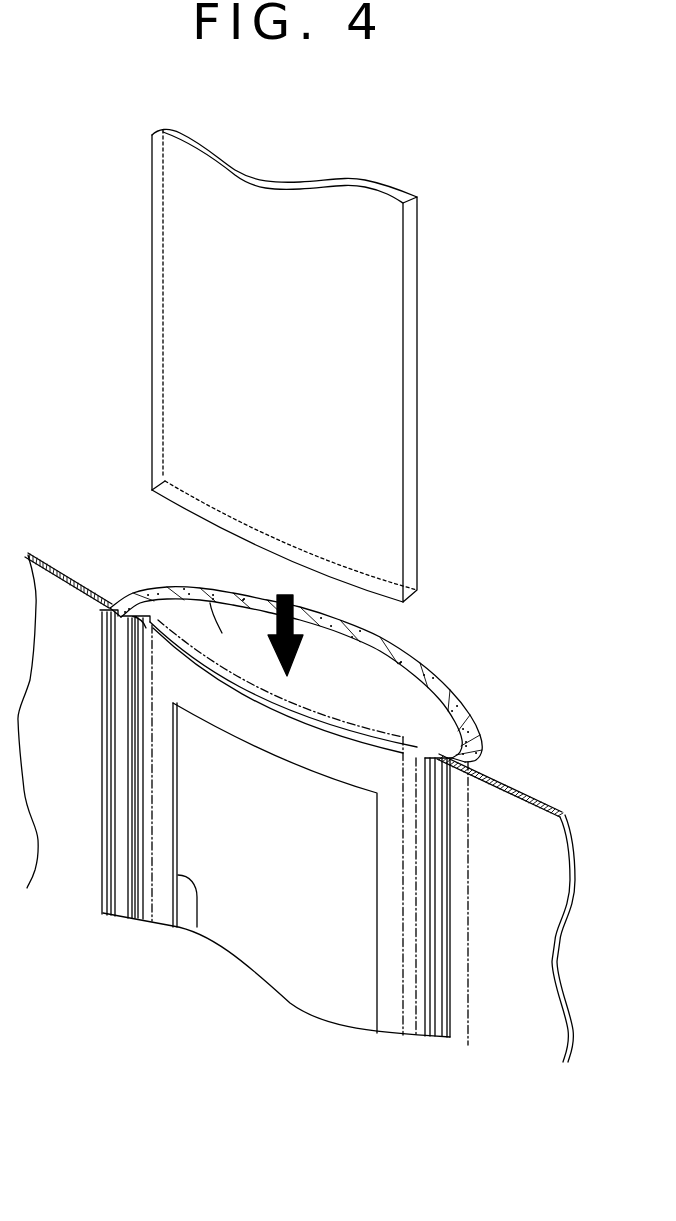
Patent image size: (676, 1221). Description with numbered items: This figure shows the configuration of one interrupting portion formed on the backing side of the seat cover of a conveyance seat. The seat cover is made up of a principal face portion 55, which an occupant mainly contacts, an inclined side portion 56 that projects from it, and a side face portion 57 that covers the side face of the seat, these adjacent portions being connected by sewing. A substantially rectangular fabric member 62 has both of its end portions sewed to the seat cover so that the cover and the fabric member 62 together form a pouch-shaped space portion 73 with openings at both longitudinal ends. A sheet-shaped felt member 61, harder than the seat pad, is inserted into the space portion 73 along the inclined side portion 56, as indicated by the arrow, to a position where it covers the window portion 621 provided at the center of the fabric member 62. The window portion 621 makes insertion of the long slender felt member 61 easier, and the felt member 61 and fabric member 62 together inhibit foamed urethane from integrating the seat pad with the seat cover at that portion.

The felt member 61 is at (413, 374).
The fabric member 62 is at (267, 737).
The window portion 621 is at (193, 930).
The space portion 73 is at (197, 597).
The principal face portion 55 is at (523, 783).
The inclined side portion 56 is at (437, 683).
The side face portion 57 is at (80, 570).